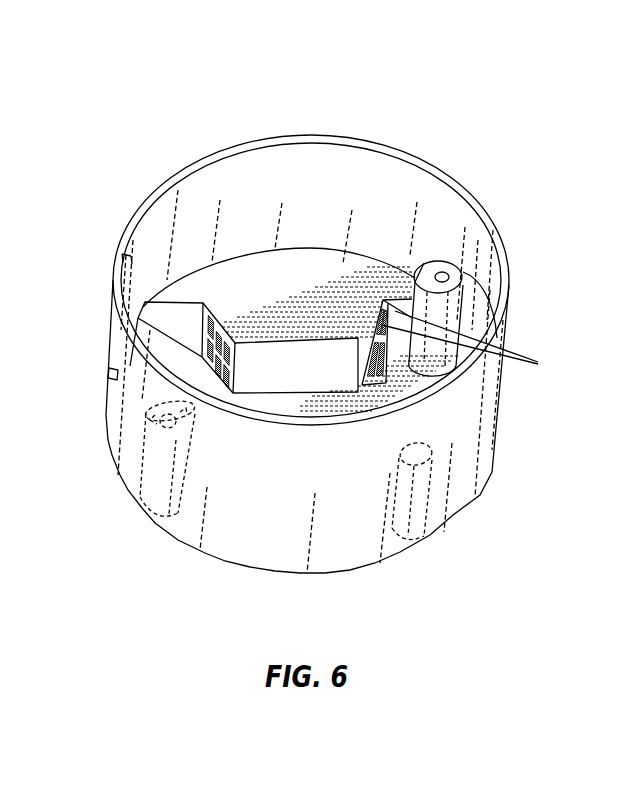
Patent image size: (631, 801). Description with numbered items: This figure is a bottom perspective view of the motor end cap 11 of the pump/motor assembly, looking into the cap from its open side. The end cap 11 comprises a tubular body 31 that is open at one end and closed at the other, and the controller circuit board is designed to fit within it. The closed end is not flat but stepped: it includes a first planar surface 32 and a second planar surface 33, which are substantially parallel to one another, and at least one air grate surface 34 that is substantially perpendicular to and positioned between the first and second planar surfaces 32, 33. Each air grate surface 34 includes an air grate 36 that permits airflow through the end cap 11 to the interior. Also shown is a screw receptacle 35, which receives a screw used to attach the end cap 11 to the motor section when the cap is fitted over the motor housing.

The end cap 11 is at (480, 82).
The tubular body 31 is at (488, 383).
The first planar surface 32 is at (408, 392).
The second planar surface 33 is at (243, 287).
The air grate surface 34 is at (178, 331).
The screw receptacle 35 is at (443, 272).
The air grate 36 is at (237, 346).